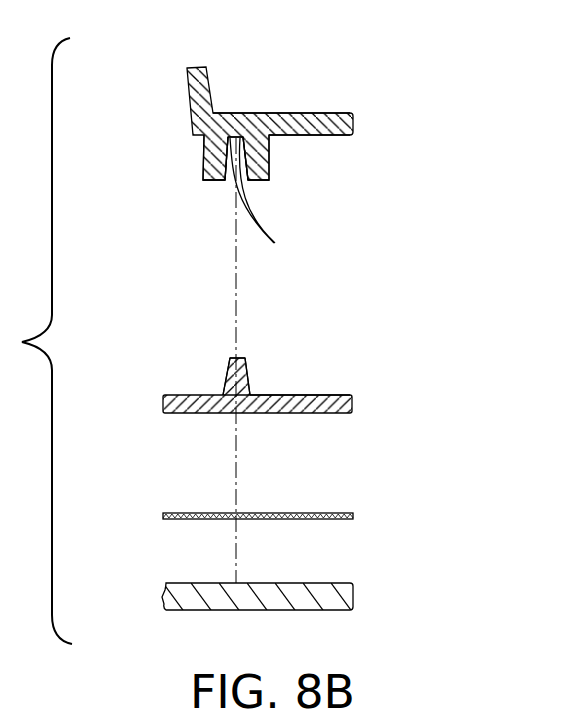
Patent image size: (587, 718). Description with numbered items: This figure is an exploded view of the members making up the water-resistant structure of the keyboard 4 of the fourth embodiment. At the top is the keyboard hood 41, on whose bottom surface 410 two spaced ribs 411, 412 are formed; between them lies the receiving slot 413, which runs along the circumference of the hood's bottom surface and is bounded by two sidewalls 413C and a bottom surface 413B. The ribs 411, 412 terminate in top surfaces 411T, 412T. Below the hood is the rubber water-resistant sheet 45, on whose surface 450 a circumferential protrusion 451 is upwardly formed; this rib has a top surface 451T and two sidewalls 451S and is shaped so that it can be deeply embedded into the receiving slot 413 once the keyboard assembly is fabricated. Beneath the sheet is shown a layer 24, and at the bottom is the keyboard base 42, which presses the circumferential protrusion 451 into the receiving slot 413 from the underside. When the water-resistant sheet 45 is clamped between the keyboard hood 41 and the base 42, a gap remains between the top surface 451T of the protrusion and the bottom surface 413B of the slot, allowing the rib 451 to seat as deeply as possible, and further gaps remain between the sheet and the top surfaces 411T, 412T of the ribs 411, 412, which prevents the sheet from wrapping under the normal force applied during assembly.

The keyboard 4 is at (228, 341).
The keyboard hood 41 is at (357, 127).
The bottom surface 410 is at (303, 136).
The rib 411 is at (203, 164).
The top surface of rib 411T is at (207, 182).
The rib 412 is at (268, 162).
The top surface of rib 412T is at (259, 182).
The receiving slot 413 is at (230, 151).
The bottom surface of receiving slot 413B is at (245, 145).
The sidewall of receiving slot 413C is at (275, 243).
The water-resistant sheet 45 is at (357, 405).
The surface of water-resistant sheet 450 is at (334, 393).
The circumferential protrusion 451 is at (224, 391).
The sidewall of rib 451S is at (223, 373).
The top surface of rib 451T is at (240, 357).
The adhesive layer 24 is at (357, 516).
The keyboard base 42 is at (357, 602).